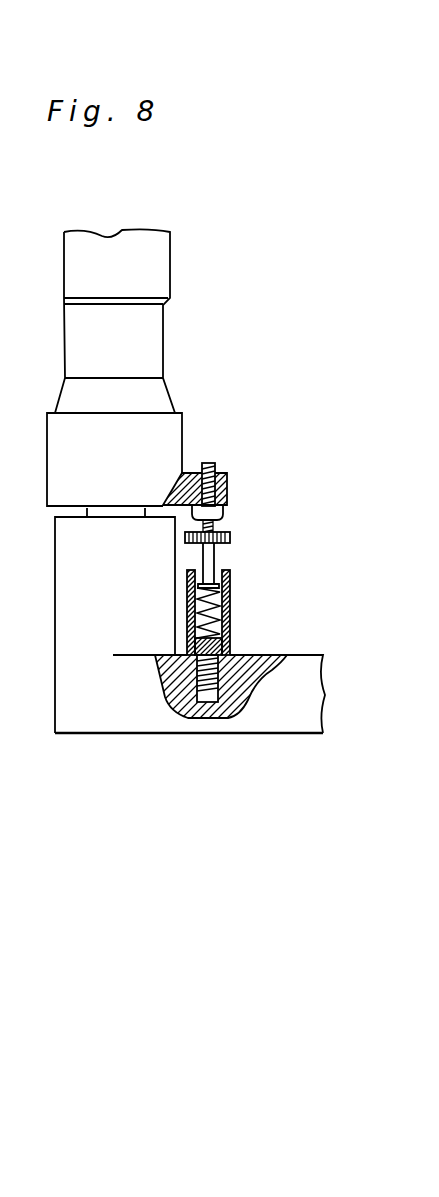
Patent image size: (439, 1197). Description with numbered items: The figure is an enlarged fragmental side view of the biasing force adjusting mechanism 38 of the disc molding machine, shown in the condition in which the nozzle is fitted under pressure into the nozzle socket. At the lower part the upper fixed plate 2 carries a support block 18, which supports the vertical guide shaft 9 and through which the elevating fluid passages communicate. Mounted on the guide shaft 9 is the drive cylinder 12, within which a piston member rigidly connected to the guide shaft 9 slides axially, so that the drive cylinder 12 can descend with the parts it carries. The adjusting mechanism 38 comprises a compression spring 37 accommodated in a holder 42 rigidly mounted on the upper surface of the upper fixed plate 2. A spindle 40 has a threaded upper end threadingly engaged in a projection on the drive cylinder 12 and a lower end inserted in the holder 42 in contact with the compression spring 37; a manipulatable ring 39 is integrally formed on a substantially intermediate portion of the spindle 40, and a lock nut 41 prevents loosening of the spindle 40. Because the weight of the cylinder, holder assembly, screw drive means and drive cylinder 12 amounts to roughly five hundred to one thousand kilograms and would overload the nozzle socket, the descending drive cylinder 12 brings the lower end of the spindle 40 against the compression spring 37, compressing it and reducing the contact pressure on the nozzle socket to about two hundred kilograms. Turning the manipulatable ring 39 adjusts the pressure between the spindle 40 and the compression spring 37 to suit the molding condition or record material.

The upper fixed plate 2 is at (302, 700).
The guide shaft 9 is at (97, 511).
The drive cylinder 12 is at (162, 433).
The support block 18 is at (75, 570).
The compression spring 37 is at (230, 620).
The biasing force adjusting mechanism 38 is at (215, 554).
The manipulatable ring 39 is at (231, 533).
The spindle 40 is at (217, 461).
The lock nut 41 is at (223, 512).
The holder 42 is at (230, 585).